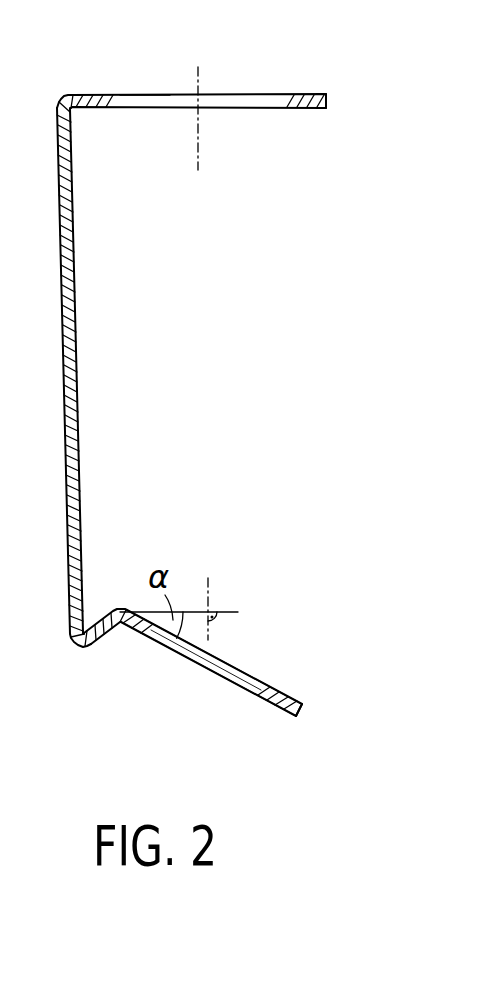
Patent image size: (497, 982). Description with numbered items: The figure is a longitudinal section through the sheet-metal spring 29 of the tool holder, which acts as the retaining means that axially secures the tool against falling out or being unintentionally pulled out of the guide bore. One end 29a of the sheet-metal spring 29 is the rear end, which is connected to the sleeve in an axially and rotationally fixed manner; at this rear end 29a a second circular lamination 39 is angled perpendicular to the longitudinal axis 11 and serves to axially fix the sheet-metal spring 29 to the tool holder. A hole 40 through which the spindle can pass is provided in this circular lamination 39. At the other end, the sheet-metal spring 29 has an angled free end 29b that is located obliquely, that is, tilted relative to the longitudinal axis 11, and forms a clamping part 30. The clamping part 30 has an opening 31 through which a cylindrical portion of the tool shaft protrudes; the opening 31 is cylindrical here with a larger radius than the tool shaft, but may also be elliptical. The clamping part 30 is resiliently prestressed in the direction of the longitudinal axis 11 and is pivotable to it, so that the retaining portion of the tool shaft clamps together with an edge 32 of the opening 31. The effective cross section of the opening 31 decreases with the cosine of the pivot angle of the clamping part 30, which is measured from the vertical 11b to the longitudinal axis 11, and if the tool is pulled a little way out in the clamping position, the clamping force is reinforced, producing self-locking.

The sheet-metal spring 29 is at (76, 370).
The end of the sheet-metal spring 29a is at (258, 102).
The angled free end 29b is at (218, 674).
The hole 40 is at (147, 96).
The second circular lamination 39 is at (318, 94).
The longitudinal axis 11 is at (198, 118).
The vertical 11b is at (232, 610).
The edge of the opening 32 is at (140, 636).
The opening 31 is at (252, 677).
The clamping part 30 is at (299, 717).